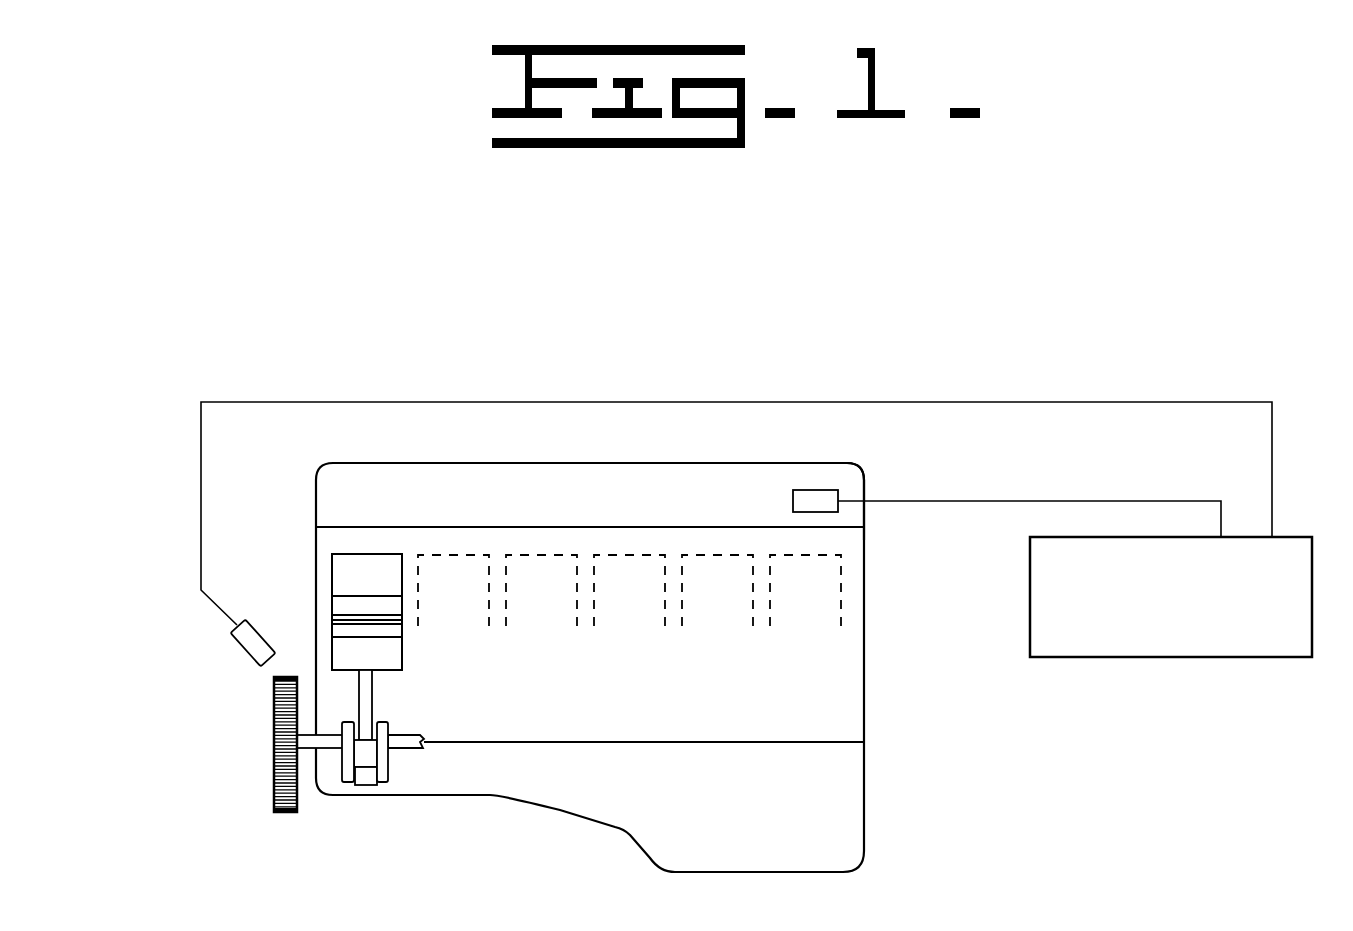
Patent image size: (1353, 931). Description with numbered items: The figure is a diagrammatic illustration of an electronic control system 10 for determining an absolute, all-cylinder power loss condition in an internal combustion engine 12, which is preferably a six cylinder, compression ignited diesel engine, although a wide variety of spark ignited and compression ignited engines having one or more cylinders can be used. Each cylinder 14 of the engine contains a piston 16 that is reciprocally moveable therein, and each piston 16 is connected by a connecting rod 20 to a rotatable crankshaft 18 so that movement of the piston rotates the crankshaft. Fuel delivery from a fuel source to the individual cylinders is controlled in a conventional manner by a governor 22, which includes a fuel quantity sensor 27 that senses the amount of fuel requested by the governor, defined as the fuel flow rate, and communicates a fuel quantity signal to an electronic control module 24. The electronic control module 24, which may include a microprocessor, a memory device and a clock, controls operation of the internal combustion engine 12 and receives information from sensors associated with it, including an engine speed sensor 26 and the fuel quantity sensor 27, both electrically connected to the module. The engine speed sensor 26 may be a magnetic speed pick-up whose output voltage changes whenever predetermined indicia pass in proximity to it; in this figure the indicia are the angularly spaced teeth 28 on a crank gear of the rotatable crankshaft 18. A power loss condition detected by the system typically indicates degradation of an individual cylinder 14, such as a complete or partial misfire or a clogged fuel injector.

The electronic control system 10 is at (1164, 248).
The internal combustion engine 12 is at (892, 731).
The cylinder 14 is at (316, 579).
The piston 16 is at (382, 630).
The rotatable crankshaft 18 is at (384, 778).
The connecting rod 20 is at (373, 707).
The governor 22 is at (887, 470).
The electronic control module 24 is at (1247, 687).
The engine speed sensor 26 is at (242, 652).
The fuel quantity sensor 27 is at (825, 512).
The angularly spaced teeth 28 is at (274, 783).